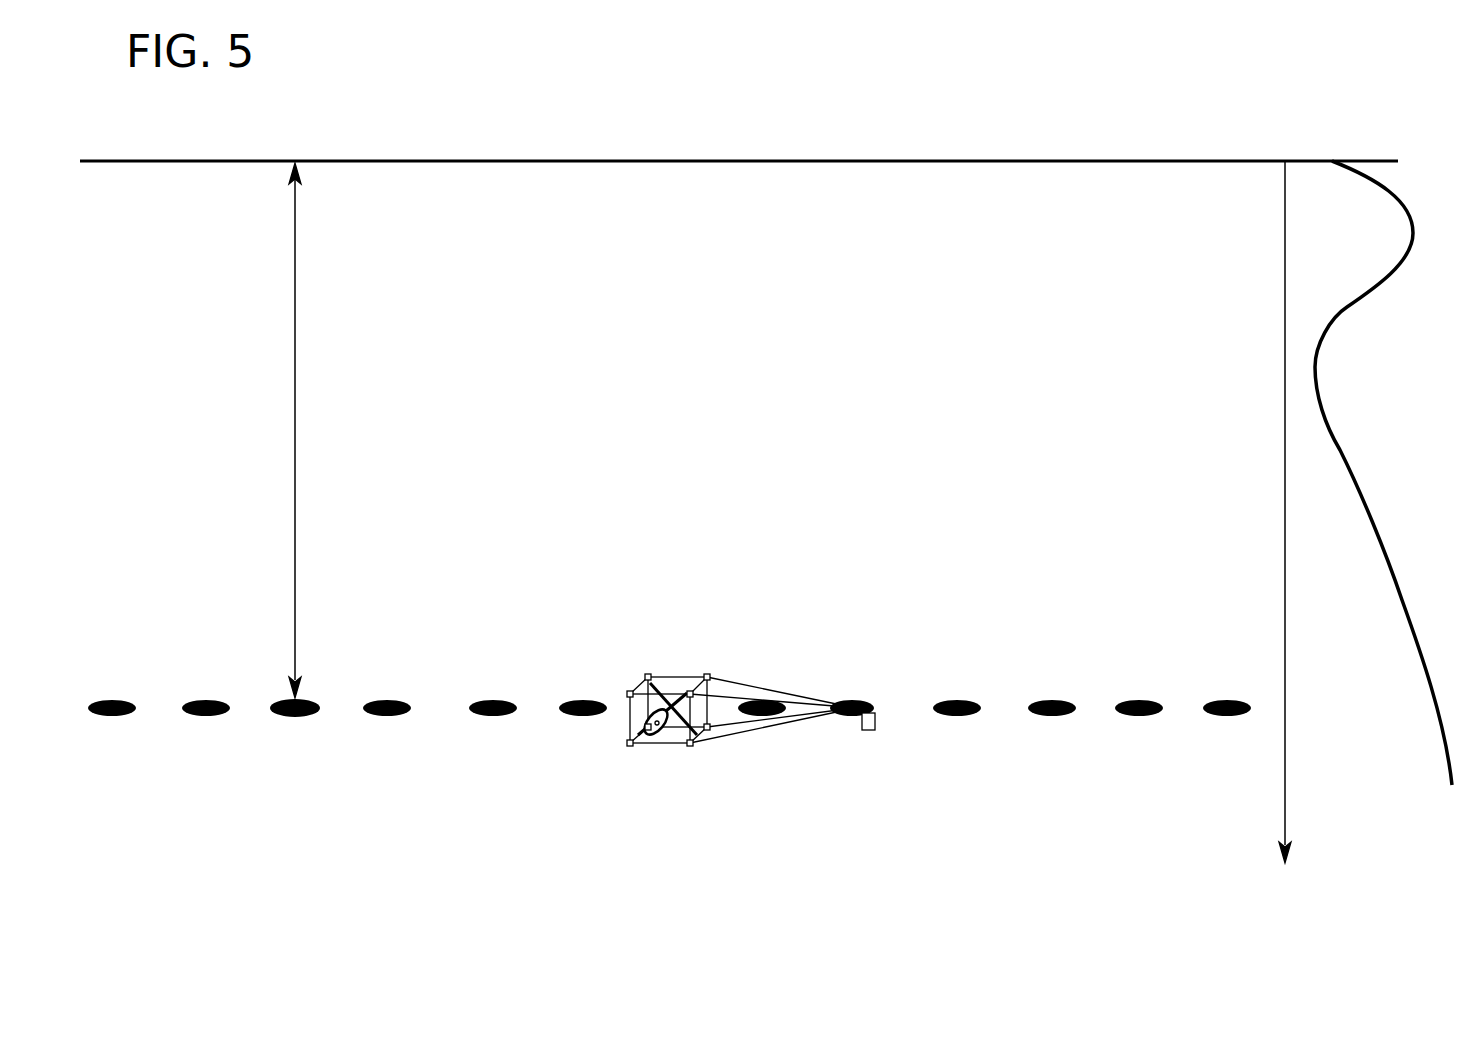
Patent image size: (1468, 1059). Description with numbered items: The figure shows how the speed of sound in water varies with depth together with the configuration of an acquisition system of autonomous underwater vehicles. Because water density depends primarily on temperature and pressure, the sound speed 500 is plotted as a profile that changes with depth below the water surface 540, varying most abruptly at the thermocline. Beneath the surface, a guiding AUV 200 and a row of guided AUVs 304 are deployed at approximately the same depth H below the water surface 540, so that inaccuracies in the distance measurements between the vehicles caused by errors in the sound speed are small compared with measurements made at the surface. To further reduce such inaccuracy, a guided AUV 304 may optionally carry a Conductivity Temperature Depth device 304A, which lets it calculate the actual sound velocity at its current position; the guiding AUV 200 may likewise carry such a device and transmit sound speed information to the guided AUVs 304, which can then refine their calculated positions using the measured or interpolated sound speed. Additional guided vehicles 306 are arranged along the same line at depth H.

The water surface 540 is at (204, 161).
The depth H is at (295, 370).
The seabed nodes 306 is at (1047, 715).
The guided AUV 304 is at (852, 700).
The Conductivity Temperature Depth (CTD) device 304A is at (863, 730).
The guiding AUV 200 is at (655, 727).
The sound speed 500 is at (1323, 333).